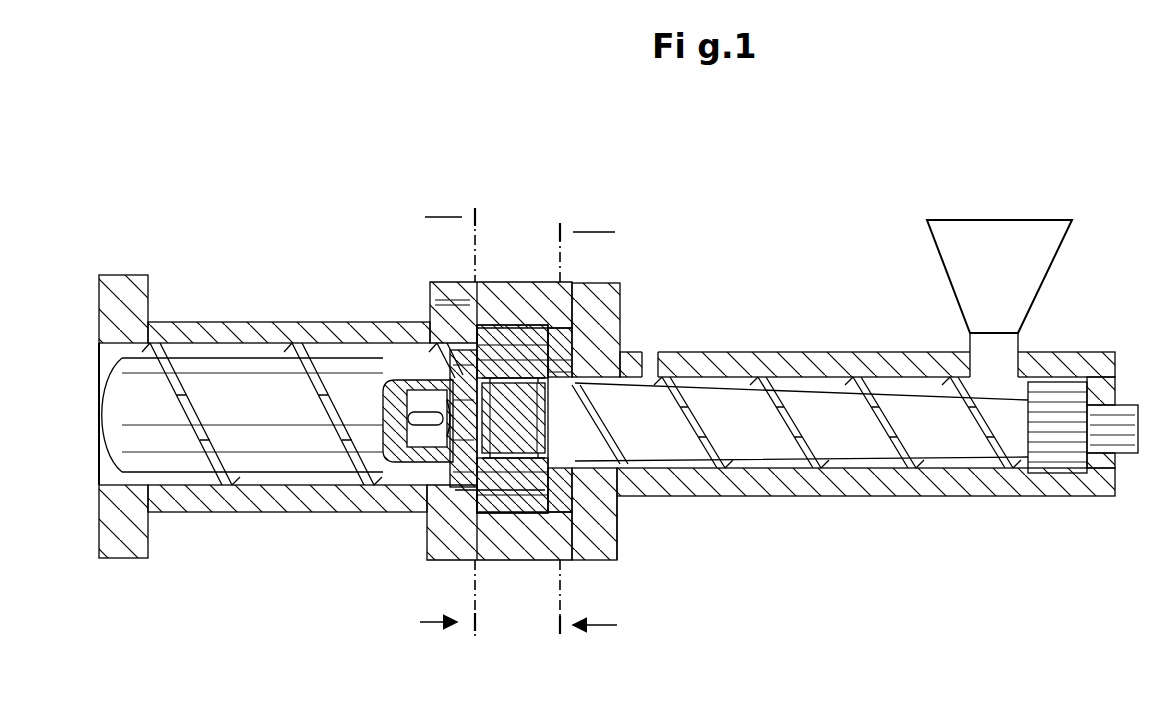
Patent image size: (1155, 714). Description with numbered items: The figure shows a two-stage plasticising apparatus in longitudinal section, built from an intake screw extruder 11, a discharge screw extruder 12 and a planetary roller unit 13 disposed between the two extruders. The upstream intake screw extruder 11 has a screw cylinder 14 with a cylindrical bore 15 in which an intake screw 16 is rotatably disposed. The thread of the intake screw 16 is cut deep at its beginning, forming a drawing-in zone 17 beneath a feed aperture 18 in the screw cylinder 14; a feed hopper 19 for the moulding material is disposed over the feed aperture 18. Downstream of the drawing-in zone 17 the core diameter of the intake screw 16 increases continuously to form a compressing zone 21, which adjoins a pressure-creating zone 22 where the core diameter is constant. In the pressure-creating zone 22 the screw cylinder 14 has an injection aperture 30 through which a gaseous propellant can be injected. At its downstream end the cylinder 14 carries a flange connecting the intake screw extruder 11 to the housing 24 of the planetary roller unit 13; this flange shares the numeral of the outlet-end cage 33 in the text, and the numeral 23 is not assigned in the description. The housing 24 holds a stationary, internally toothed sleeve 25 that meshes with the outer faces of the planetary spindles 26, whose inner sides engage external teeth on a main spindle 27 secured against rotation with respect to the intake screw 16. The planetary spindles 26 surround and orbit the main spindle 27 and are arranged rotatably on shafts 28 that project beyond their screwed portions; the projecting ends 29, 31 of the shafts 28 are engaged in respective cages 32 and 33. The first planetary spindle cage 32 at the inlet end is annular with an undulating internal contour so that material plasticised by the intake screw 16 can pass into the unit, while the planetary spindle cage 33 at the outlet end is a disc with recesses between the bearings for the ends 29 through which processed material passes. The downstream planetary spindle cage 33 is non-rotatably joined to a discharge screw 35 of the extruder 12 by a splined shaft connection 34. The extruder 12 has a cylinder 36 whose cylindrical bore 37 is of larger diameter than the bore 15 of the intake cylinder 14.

The intake screw extruder 11 is at (810, 298).
The discharge screw extruder 12 is at (222, 290).
The planetary roller unit 13 is at (512, 241).
The screw cylinder 14 is at (962, 492).
The cylindrical bore 15 is at (850, 472).
The intake screw 16 is at (282, 448).
The drawing-in zone 17 is at (935, 445).
The feed aperture 18 is at (991, 345).
The feed hopper 19 is at (1054, 263).
The compressing zone 21 is at (826, 410).
The pressure-creating zone 22 is at (738, 395).
The flange of second barrel 23 is at (608, 298).
The housing 24 is at (527, 298).
The internally toothed sleeve 25 is at (508, 508).
The planetary spindles 26 is at (523, 510).
The main spindle 27 is at (497, 432).
The shafts 28 is at (452, 494).
The projecting ends of the shafts 29 is at (432, 326).
The injection aperture 30 is at (652, 364).
The projecting ends of the shafts 31 is at (577, 358).
The first planetary spindle cage 32 is at (618, 503).
The planetary spindle cage 33 is at (433, 357).
The splined shaft connection 34 is at (405, 423).
The discharge screw 35 is at (241, 487).
The cylinder 36 is at (181, 505).
The cylindrical bore 37 is at (280, 490).